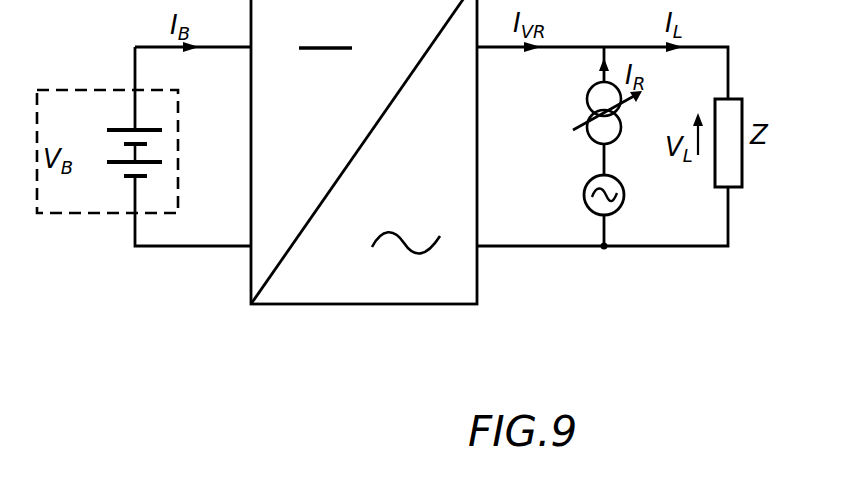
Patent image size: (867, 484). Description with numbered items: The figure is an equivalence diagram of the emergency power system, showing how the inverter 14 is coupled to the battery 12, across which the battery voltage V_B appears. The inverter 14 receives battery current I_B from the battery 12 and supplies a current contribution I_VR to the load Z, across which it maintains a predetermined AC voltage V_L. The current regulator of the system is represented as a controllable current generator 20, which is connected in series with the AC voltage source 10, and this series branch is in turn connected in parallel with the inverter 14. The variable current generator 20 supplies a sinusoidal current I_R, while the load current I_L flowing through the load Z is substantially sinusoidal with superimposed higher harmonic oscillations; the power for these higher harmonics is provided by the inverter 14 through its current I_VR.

The AC voltage source 10 is at (621, 199).
The battery 12 is at (75, 216).
The inverter 14 is at (366, 304).
The controllable current generator 20 is at (588, 108).